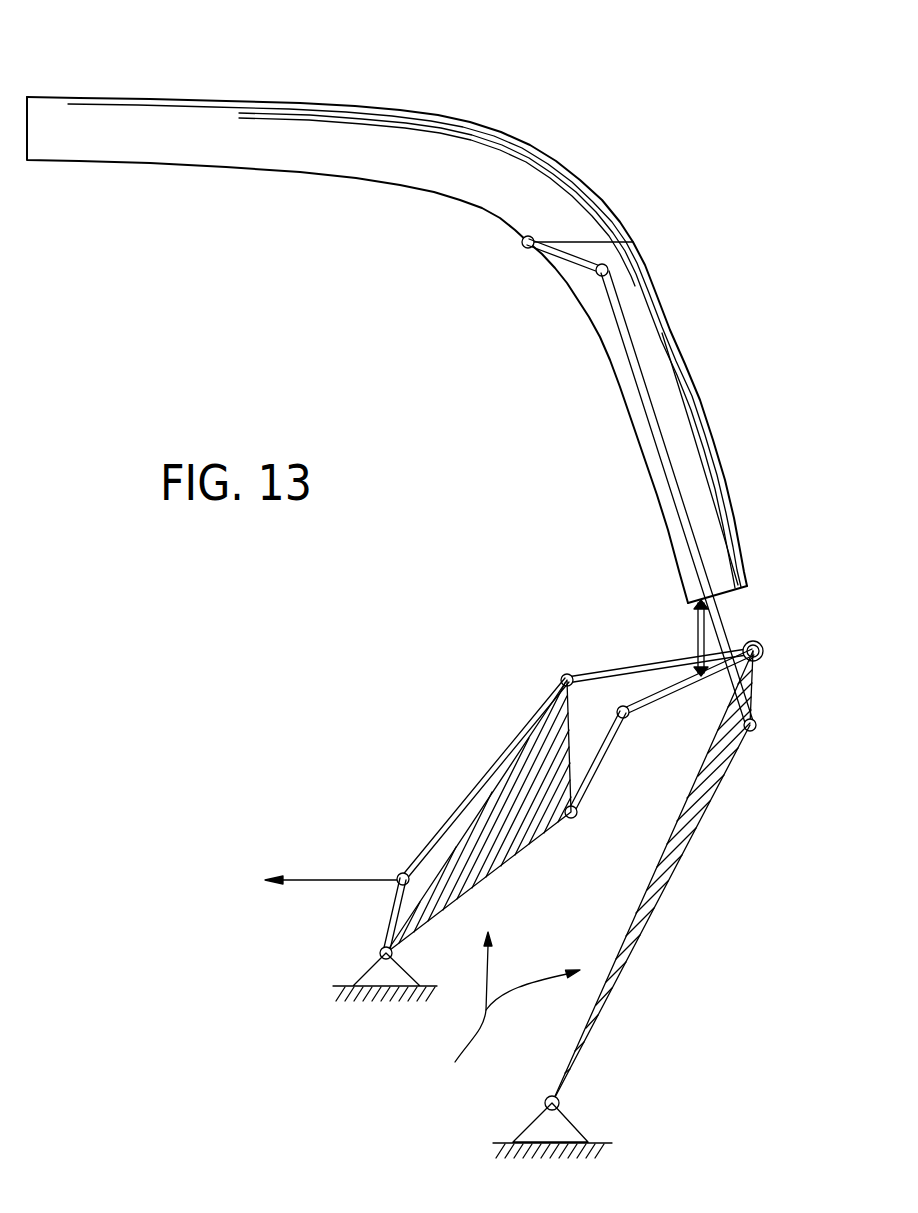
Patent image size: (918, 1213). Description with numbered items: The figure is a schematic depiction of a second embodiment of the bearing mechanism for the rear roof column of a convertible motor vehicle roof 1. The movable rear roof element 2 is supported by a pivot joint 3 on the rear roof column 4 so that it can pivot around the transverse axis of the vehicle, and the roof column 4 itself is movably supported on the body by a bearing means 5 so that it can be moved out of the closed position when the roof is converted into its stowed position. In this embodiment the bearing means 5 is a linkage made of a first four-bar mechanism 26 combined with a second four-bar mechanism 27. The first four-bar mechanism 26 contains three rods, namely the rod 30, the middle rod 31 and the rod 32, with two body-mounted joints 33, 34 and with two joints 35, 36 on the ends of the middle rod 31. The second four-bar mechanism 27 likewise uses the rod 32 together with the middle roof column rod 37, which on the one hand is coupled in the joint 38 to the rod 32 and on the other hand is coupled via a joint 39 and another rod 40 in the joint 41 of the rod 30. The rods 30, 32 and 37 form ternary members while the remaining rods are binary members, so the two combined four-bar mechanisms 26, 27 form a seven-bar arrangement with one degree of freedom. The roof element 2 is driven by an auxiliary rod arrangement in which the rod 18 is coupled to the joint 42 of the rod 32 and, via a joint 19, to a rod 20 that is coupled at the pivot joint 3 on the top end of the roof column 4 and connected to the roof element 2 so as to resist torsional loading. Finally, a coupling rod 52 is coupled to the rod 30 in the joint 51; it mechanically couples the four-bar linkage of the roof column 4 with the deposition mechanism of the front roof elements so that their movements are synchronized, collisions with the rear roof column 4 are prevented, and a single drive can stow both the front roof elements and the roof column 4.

The motor vehicle roof 1 is at (642, 145).
The rear roof element 2 is at (412, 132).
The pivot joint 3 is at (522, 248).
The rear roof column 4 is at (688, 445).
The bearing means 5 is at (511, 1014).
The rod 18 is at (648, 400).
The joint 19 is at (640, 258).
The rod 20 is at (560, 273).
The first four-bar mechanism 26 is at (476, 755).
The second four-bar mechanism 27 is at (714, 846).
The rod 30 is at (502, 857).
The middle rod 31 is at (640, 668).
The rod 32 is at (642, 928).
The body-mounted joint 33 is at (379, 953).
The body-mounted joint 34 is at (560, 1104).
The joint 35 is at (565, 673).
The joint 36 is at (772, 640).
The middle roof column rod 37 is at (680, 695).
The joint 38 is at (777, 668).
The joint 39 is at (628, 718).
The rod 40 is at (598, 758).
The joint 41 is at (576, 818).
The joint 42 is at (758, 728).
The joint 51 is at (400, 872).
The coupling rod 52 is at (340, 877).